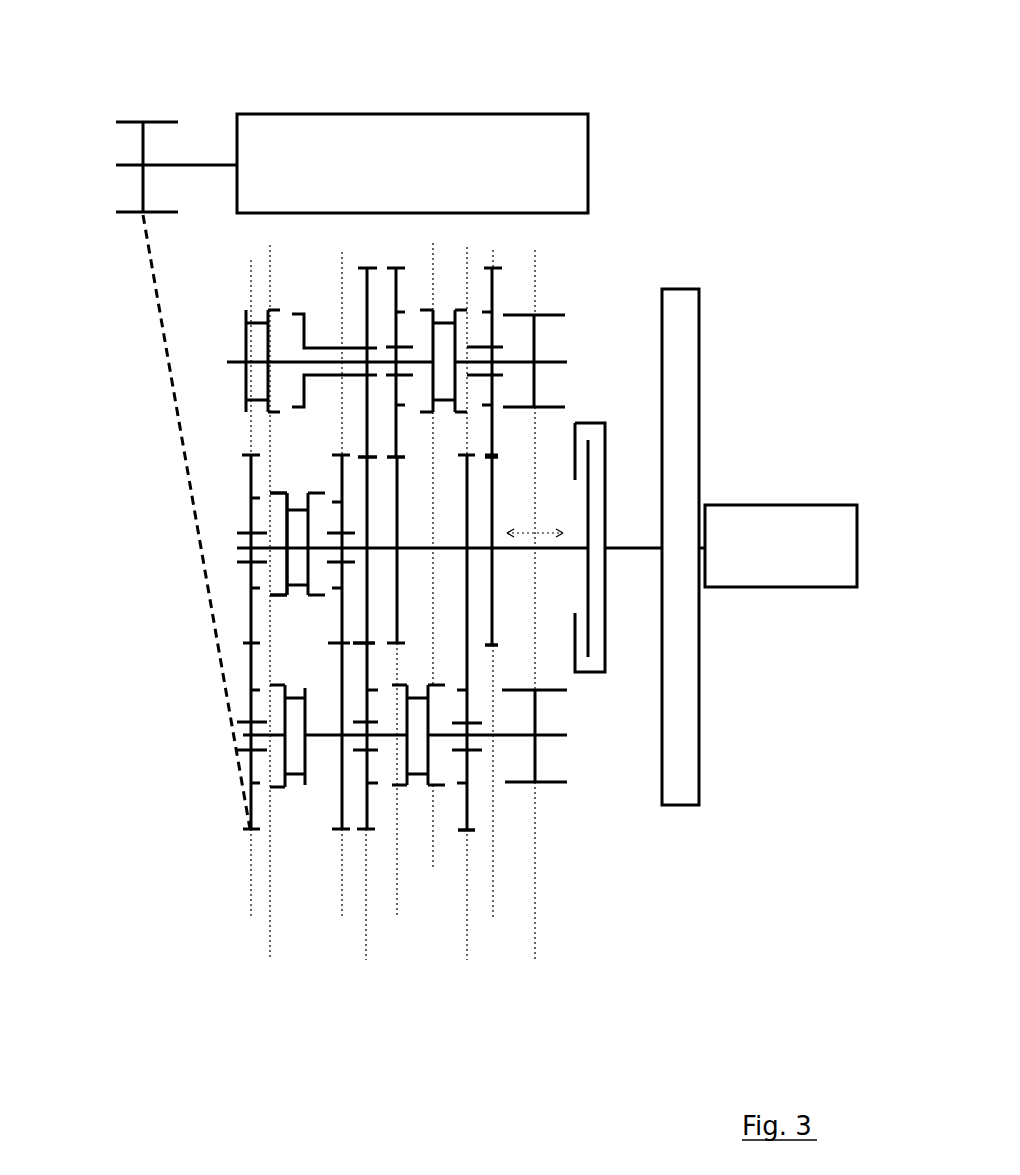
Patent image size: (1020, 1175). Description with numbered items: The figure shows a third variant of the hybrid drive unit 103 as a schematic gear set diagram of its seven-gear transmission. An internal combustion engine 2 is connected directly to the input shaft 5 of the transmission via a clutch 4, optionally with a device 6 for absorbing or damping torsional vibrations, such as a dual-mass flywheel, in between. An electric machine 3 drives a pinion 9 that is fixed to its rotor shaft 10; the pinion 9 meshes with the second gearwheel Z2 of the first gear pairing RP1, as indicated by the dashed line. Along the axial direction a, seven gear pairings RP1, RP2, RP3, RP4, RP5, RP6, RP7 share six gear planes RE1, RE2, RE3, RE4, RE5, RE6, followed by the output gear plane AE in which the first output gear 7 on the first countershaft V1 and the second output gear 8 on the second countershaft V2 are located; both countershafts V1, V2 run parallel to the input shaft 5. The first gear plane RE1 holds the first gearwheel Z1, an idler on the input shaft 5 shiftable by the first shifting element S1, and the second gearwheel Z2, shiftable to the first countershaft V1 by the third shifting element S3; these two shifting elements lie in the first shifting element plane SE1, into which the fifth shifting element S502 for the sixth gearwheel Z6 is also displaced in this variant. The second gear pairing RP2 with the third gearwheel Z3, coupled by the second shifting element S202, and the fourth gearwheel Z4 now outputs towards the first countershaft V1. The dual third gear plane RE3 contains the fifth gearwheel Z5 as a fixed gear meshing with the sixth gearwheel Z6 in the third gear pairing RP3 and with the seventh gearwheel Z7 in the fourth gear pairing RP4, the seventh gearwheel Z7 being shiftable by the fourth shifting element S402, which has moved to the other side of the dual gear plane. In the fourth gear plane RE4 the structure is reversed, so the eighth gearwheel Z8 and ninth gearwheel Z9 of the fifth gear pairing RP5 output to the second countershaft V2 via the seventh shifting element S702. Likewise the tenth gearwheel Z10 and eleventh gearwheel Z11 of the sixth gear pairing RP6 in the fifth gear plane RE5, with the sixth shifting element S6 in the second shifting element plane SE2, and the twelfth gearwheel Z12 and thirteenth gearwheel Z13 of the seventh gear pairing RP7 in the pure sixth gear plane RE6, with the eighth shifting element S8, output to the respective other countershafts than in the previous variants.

The internal combustion engine 2 is at (817, 520).
The electric machine 3 is at (563, 133).
The clutch 4 is at (598, 507).
The input shaft 5 is at (237, 548).
The device for absorption and/or damping of torsional vibrations 6 is at (708, 502).
The first output gear 7 is at (537, 713).
The second output gear 8 is at (538, 340).
The pinion 9 is at (143, 137).
The rotor shaft 10 is at (204, 163).
The hybrid drive unit 103 is at (712, 170).
The axial direction a is at (535, 520).
The fifth shifting element S502 is at (278, 342).
The seventh shifting element S702 is at (415, 337).
The sixth shifting element S6 is at (470, 312).
The first shifting element S1 is at (272, 512).
The second shifting element S202 is at (322, 515).
The third shifting element S3 is at (268, 775).
The fourth shifting element S402 is at (391, 758).
The eighth shifting element S8 is at (450, 768).
The first gearwheel Z1 is at (335, 478).
The second gearwheel Z2 is at (340, 757).
The third gearwheel Z3 is at (247, 454).
The fourth gearwheel Z4 is at (353, 748).
The fifth gearwheel Z5 is at (366, 595).
The sixth gearwheel Z6 is at (366, 266).
The seventh gearwheel Z7 is at (372, 815).
The eighth gearwheel Z8 is at (396, 613).
The ninth gearwheel Z9 is at (395, 266).
The tenth gearwheel Z10 is at (468, 528).
The eleventh gearwheel Z11 is at (478, 790).
The twelfth gearwheel Z12 is at (492, 601).
The thirteenth gearwheel Z13 is at (497, 278).
The first gear pairing RP1 is at (243, 645).
The second gear pairing RP2 is at (355, 645).
The third gear pairing RP3 is at (357, 452).
The fourth gear pairing RP4 is at (330, 645).
The fifth gear pairing RP5 is at (392, 452).
The sixth gear pairing RP6 is at (484, 646).
The seventh gear pairing RP7 is at (505, 448).
The first countershaft V1 is at (565, 737).
The second countershaft V2 is at (562, 358).
The first gear plane RE1 is at (238, 605).
The second gear plane RE2 is at (334, 601).
The third gear plane RE3 is at (368, 917).
The fourth gear plane RE4 is at (406, 797).
The fifth gear plane RE5 is at (468, 626).
The sixth gear plane RE6 is at (498, 600).
The first shifting element plane SE1 is at (270, 625).
The second shifting element plane SE2 is at (434, 572).
The output gear plane AE is at (541, 628).